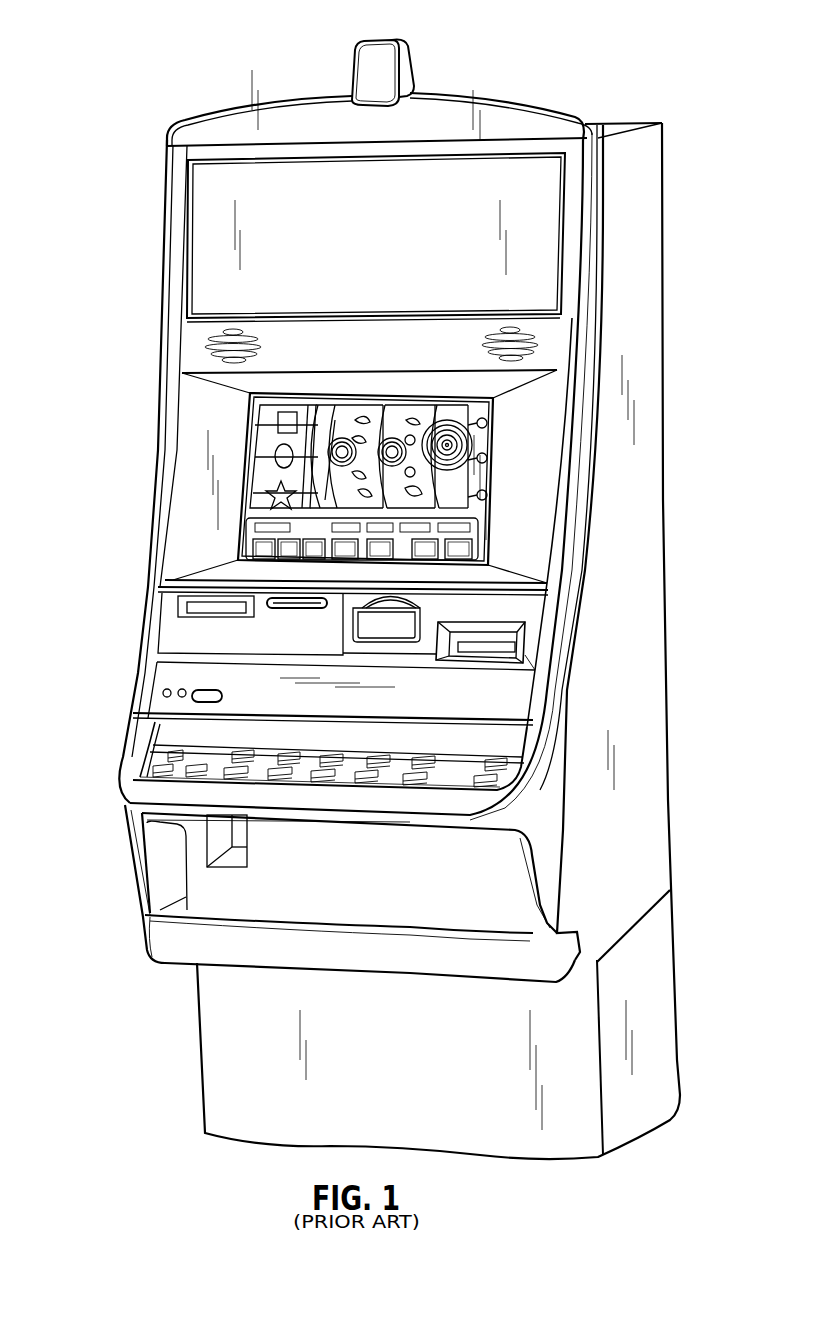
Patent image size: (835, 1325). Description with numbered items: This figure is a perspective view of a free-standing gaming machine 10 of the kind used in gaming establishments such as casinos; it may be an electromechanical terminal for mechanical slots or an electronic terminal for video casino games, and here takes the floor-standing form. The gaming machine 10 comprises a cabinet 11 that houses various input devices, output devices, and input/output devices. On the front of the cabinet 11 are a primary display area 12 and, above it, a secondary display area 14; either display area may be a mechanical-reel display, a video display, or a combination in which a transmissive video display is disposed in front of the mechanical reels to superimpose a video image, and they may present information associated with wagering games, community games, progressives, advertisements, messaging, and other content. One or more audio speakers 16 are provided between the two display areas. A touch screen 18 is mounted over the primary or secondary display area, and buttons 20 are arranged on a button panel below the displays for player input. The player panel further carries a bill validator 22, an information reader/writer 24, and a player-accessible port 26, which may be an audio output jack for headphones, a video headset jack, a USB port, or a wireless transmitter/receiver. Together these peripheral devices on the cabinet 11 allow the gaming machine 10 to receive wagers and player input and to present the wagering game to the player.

The gaming machine 10 is at (102, 157).
The cabinet 11 is at (657, 258).
The primary display area 12 is at (277, 437).
The secondary display area 14 is at (222, 243).
The audio speakers 16 is at (528, 335).
The touch screen 18 is at (480, 538).
The buttons 20 is at (497, 783).
The bill validator 22 is at (483, 665).
The information reader/writer 24 is at (297, 608).
The player-accessible port 26 is at (205, 690).